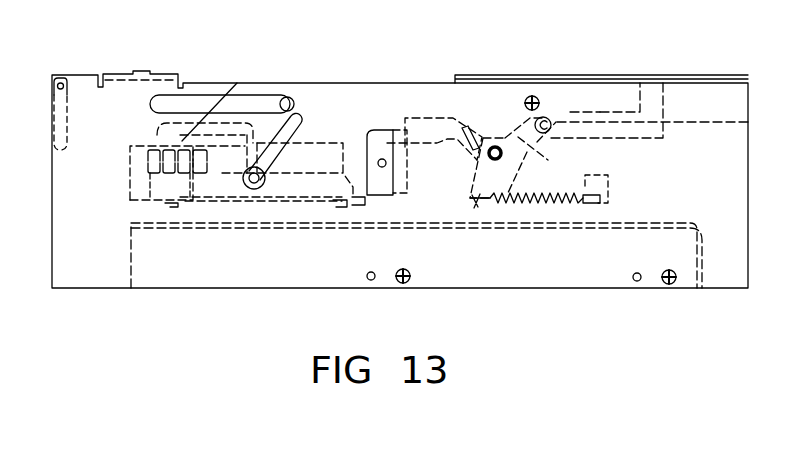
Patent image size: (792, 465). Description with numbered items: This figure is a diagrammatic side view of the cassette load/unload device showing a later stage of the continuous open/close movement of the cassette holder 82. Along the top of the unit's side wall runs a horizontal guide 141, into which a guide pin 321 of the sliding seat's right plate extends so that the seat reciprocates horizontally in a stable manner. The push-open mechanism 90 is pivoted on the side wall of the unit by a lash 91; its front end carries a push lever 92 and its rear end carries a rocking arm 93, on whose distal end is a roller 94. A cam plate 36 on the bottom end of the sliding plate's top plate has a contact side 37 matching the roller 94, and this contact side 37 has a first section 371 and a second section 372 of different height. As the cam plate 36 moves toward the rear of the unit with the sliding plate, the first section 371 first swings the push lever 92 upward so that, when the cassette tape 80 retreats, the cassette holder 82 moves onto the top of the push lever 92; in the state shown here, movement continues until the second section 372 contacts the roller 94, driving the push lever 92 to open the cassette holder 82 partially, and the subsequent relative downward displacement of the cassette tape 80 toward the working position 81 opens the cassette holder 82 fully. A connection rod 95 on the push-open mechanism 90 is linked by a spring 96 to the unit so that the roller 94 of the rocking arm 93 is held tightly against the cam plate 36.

The cam plate 36 is at (595, 90).
The contact side 37 is at (638, 114).
The first section 371 is at (598, 112).
The second section 372 is at (520, 117).
The cassette tape 80 is at (130, 162).
The working position 81 is at (288, 196).
The cassette holder 82 is at (380, 130).
The push-open mechanism 90 is at (512, 250).
The lash 91 is at (490, 146).
The push lever 92 is at (433, 118).
The rocking arm 93 is at (527, 143).
The roller 94 is at (543, 117).
The connection rod 95 is at (477, 202).
The spring 96 is at (565, 188).
The horizontal guide 141 is at (205, 96).
The guide pin 321 is at (287, 97).